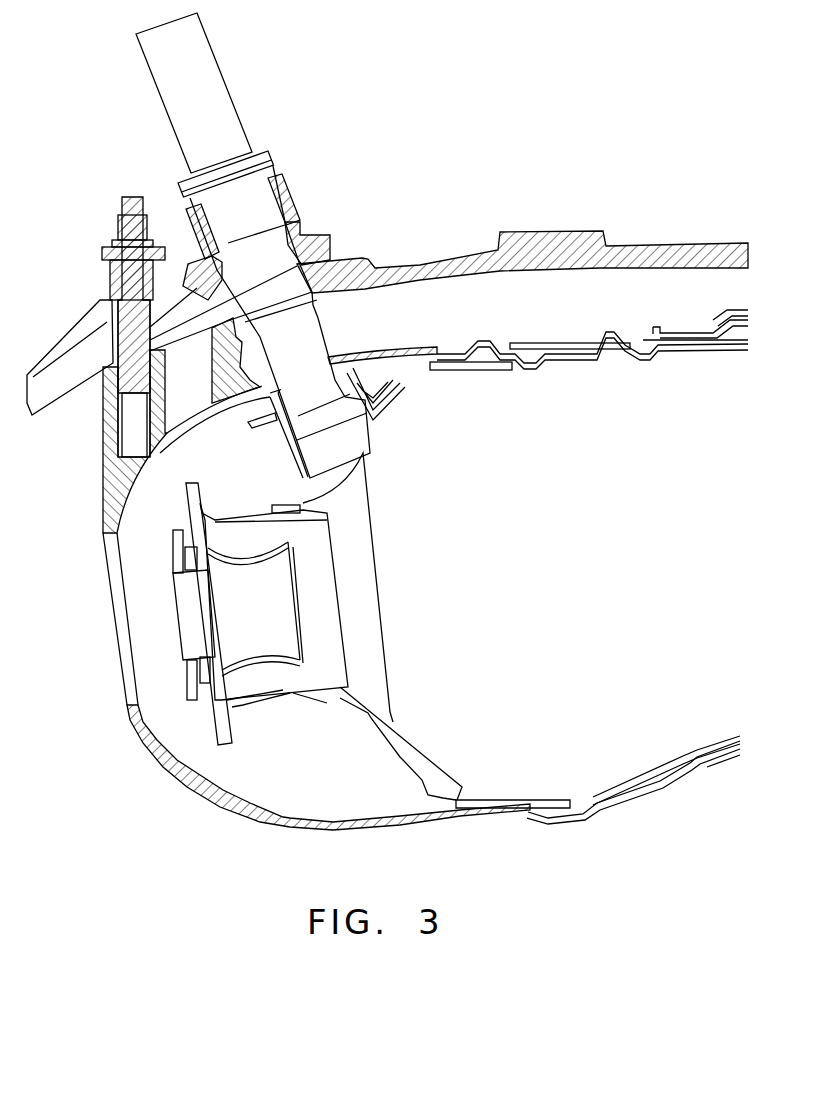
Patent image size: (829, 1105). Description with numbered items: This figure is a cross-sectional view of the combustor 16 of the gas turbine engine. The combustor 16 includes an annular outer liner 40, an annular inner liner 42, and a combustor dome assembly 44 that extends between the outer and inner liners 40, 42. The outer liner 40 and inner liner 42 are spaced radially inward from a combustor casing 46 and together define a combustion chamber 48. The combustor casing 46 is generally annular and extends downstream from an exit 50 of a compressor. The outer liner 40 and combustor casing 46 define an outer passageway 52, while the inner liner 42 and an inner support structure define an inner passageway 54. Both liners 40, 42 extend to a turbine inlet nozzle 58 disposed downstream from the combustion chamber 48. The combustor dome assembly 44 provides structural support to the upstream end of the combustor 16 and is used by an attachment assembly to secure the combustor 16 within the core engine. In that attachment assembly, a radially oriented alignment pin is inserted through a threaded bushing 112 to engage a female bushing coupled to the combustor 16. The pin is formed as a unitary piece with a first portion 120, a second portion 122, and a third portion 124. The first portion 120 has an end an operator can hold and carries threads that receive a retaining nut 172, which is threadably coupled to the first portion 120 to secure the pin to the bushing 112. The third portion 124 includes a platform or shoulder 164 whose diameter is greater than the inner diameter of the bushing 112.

The combustor 16 is at (464, 126).
The annular outer liner 40 is at (580, 358).
The annular inner liner 42 is at (627, 787).
The combustor dome assembly 44 is at (280, 813).
The combustor casing 46 is at (570, 233).
The combustion chamber 48 is at (558, 581).
The exit of a compressor 50 is at (84, 658).
The outer passageway 52 is at (566, 301).
The inner passageway 54 is at (566, 864).
The turbine inlet nozzle 58 is at (733, 566).
The threaded bushing 112 is at (108, 250).
The first portion 120 is at (128, 196).
The second portion 122 is at (112, 264).
The third portion 124 is at (115, 362).
The shoulder 164 is at (115, 306).
The retaining nut 172 is at (117, 232).